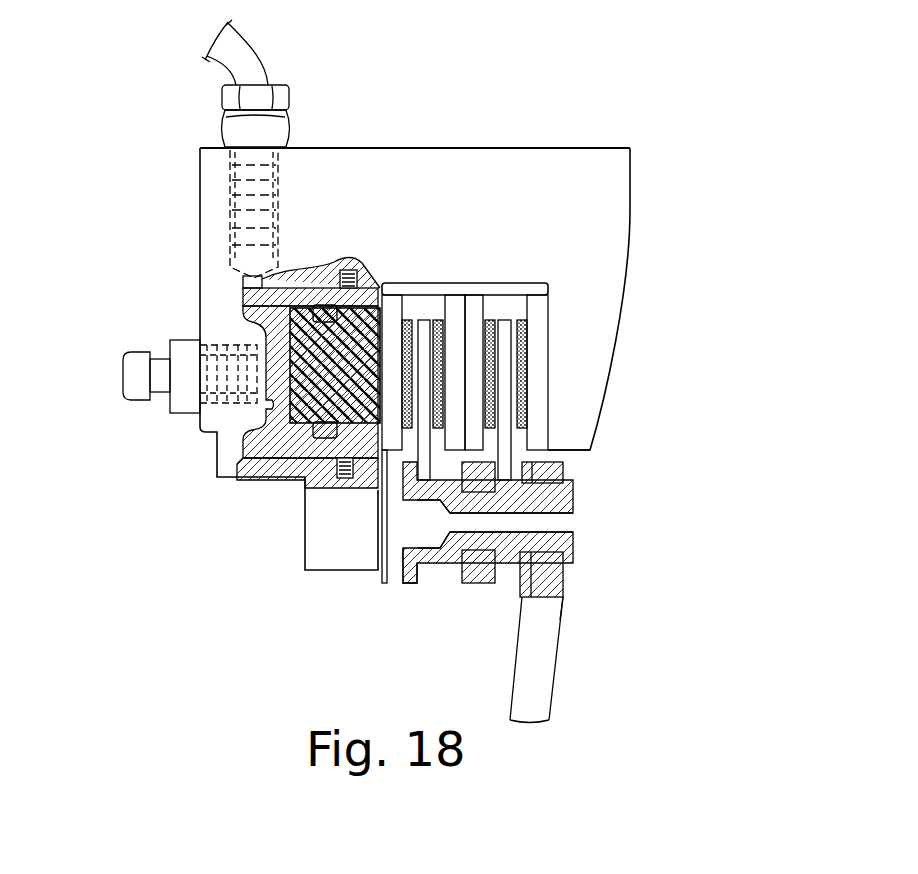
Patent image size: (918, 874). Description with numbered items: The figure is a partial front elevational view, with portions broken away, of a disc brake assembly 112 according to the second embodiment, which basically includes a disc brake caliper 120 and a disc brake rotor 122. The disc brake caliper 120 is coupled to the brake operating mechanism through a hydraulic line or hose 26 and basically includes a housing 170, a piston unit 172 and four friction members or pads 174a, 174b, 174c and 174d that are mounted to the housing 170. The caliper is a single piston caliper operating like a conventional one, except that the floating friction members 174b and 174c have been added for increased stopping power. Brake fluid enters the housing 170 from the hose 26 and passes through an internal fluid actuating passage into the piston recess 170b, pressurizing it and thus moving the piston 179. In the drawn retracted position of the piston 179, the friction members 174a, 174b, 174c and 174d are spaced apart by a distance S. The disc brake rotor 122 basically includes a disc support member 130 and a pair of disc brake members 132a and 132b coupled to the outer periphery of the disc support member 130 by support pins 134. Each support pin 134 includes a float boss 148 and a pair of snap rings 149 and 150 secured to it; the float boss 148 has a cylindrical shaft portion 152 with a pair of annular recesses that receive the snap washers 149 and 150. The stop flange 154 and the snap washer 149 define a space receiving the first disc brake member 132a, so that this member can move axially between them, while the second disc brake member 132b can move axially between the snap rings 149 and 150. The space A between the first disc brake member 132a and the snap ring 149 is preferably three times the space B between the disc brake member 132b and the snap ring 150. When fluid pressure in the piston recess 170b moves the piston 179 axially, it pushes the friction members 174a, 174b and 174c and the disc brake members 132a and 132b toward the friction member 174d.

The hydraulic line or hose 26 is at (263, 59).
The housing 170 is at (504, 143).
The disc brake assembly 112 is at (666, 162).
The disc brake caliper 120 is at (198, 257).
The piston recess 170b is at (257, 407).
The piston 179 is at (258, 443).
The piston unit 172 is at (282, 463).
The friction member 174a is at (393, 292).
The floating friction member 174b is at (455, 294).
The floating friction member 174c is at (471, 294).
The friction member 174d is at (540, 290).
The first disc brake member 132a is at (433, 368).
The second disc brake member 132b is at (500, 393).
The support pin 134 is at (599, 503).
The stop flange 154 is at (405, 478).
The float boss 148 is at (400, 581).
The cylindrical shaft portion 152 is at (450, 472).
The snap ring 149 is at (462, 595).
The snap ring 150 is at (527, 587).
The disc brake rotor 122 is at (586, 641).
The disc support member 130 is at (559, 681).
The distance S is at (413, 314).
The space A is at (443, 573).
The space B is at (540, 458).